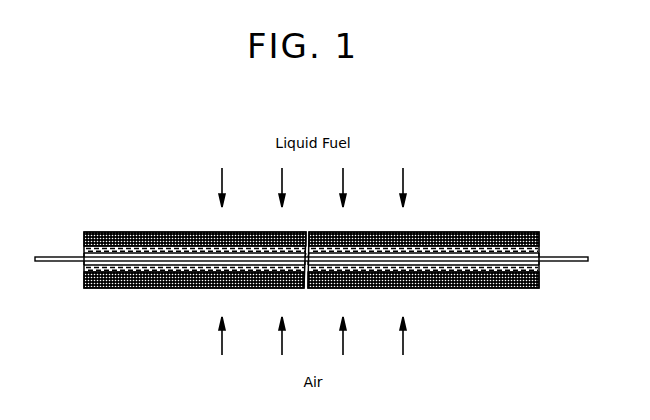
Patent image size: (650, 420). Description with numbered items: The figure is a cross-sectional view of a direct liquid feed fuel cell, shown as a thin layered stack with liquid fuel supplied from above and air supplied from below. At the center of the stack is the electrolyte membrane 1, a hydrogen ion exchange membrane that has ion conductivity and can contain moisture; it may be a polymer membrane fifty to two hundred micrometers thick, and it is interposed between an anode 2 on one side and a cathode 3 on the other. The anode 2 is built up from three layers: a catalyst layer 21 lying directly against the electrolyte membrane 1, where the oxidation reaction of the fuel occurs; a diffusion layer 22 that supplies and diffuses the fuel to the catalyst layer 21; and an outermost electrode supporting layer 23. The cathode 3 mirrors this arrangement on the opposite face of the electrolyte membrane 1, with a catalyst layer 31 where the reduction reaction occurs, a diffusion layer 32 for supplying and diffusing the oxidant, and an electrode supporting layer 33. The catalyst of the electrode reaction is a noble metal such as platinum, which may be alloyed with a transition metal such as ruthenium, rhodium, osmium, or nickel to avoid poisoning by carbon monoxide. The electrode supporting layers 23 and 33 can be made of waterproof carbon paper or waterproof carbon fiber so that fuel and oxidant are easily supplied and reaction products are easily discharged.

The electrolyte membrane 1 is at (588, 259).
The anode 2 is at (349, 233).
The catalyst layer 21 is at (540, 253).
The diffusion layer 22 is at (540, 247).
The electrode supporting layer 23 is at (540, 239).
The cathode 3 is at (349, 288).
The catalyst layer 31 is at (540, 265).
The diffusion layer 32 is at (540, 271).
The electrode supporting layer 33 is at (540, 281).